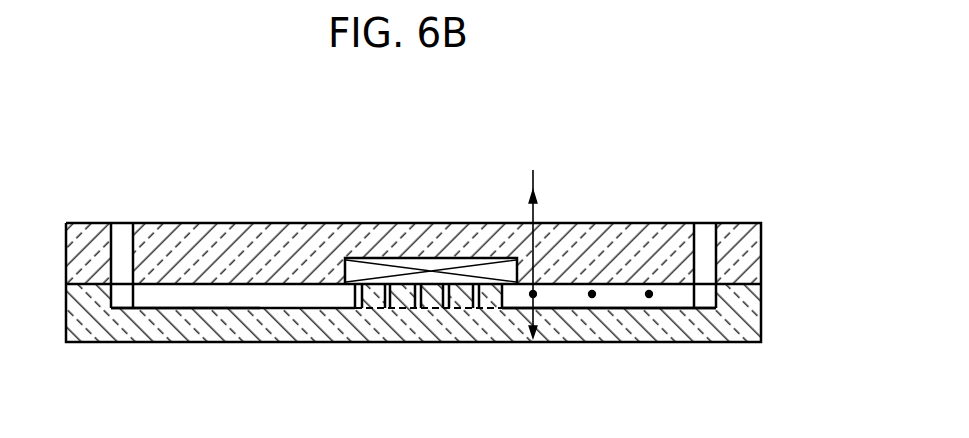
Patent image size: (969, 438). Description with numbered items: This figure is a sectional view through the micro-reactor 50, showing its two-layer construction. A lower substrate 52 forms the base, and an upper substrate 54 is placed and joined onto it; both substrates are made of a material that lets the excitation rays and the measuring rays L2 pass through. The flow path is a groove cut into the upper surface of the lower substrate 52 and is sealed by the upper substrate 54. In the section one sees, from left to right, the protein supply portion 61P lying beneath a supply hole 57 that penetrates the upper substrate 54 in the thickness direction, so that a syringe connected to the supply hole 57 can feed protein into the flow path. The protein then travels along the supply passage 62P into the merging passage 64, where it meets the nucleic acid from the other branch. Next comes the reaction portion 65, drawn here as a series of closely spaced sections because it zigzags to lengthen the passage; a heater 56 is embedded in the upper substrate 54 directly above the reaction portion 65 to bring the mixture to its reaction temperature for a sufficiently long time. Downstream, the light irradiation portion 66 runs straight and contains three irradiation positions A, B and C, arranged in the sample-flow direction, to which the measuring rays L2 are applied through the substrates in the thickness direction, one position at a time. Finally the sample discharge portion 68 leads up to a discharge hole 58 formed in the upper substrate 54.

The micro-reactor 50 is at (295, 175).
The lower substrate 52 is at (733, 323).
The upper substrate 54 is at (753, 249).
The heater 56 is at (403, 262).
The supply hole 57 is at (122, 240).
The discharge hole 58 is at (705, 240).
The protein supply portion 61P is at (122, 297).
The supply passage 62P is at (197, 306).
The merging passage 64 is at (313, 298).
The reaction portion 65 is at (418, 305).
The light irradiation portion 66 is at (573, 300).
The sample discharge portion 68 is at (703, 307).
The measuring rays L2 is at (530, 180).
The irradiation position A is at (537, 294).
The irradiation position B is at (592, 291).
The irradiation position C is at (649, 291).